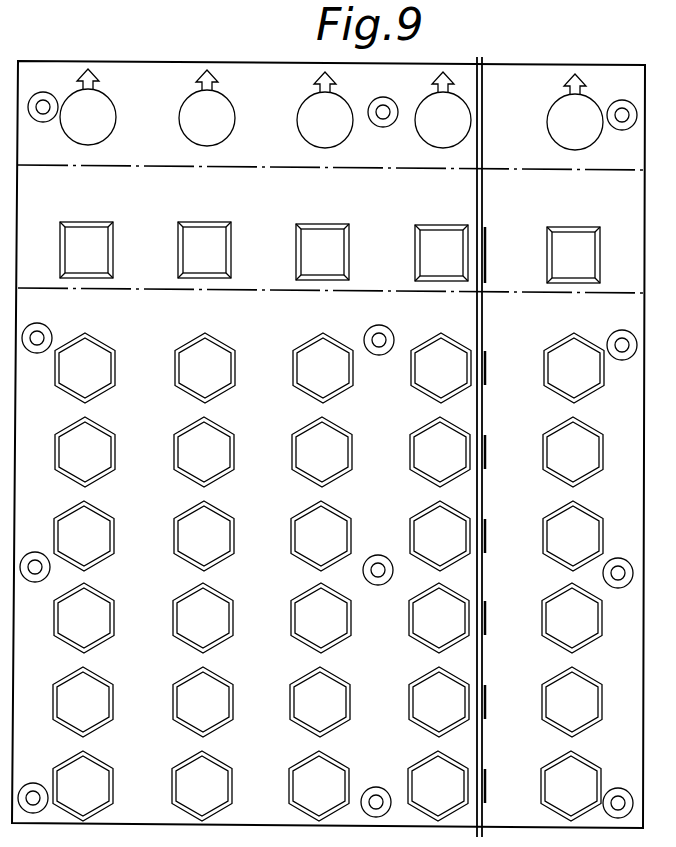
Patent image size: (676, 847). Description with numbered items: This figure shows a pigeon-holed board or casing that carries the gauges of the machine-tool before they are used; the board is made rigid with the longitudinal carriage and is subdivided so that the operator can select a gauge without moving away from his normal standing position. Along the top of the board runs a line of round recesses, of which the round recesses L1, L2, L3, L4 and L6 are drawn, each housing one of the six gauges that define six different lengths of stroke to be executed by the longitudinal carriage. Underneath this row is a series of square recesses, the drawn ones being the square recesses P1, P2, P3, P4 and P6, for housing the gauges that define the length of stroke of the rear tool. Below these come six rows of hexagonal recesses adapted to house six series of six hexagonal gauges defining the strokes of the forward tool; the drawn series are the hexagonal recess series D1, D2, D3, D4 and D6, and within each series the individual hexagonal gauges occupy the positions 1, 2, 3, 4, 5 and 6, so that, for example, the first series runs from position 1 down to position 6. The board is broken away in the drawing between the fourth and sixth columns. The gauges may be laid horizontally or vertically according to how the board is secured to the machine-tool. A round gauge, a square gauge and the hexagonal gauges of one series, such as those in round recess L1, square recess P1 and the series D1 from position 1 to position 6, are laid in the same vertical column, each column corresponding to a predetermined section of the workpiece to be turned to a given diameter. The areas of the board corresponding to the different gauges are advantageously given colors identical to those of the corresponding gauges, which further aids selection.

The round gauge recess L1 is at (92, 97).
The round gauge recess L2 is at (207, 108).
The round gauge recess L3 is at (325, 110).
The round gauge recess L4 is at (443, 110).
The round gauge recess L6 is at (557, 107).
The square gauge recess P1 is at (86, 240).
The square gauge recess P2 is at (204, 240).
The square gauge recess P3 is at (322, 242).
The square gauge recess P4 is at (441, 243).
The square gauge recess P6 is at (573, 245).
The hexagonal gauge recess series D1 is at (84, 572).
The hexagonal gauge recess series D2 is at (203, 572).
The hexagonal gauge recess series D3 is at (321, 572).
The hexagonal gauge recess series D4 is at (439, 572).
The hexagonal gauge recess series D6 is at (572, 572).
The first hexagonal gauge position 1 is at (347, 332).
The second hexagonal gauge position 2 is at (347, 416).
The third hexagonal gauge position 3 is at (346, 500).
The fourth hexagonal gauge position 4 is at (345, 582).
The fifth hexagonal gauge position 5 is at (345, 666).
The sixth hexagonal gauge position 6 is at (345, 750).